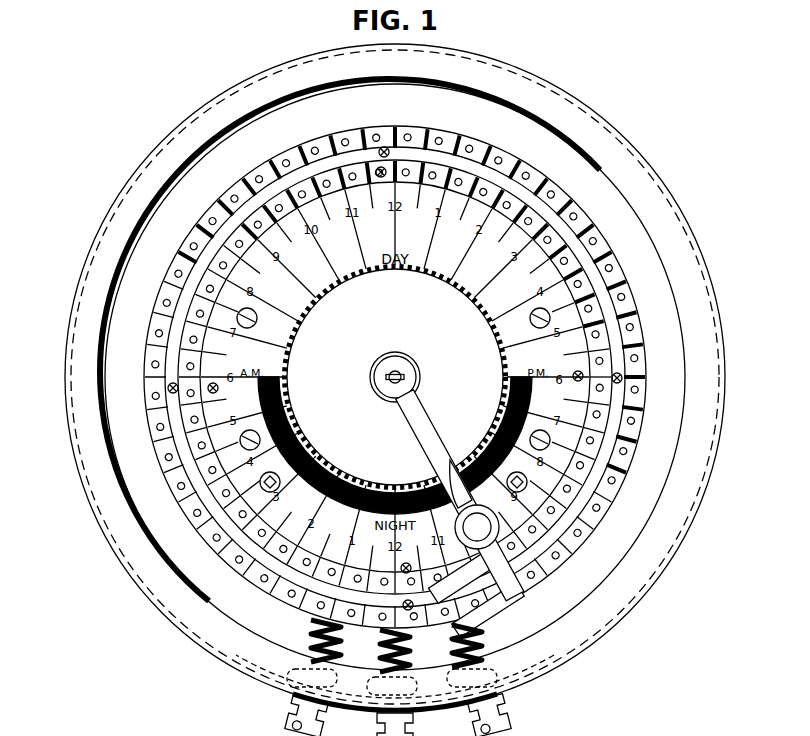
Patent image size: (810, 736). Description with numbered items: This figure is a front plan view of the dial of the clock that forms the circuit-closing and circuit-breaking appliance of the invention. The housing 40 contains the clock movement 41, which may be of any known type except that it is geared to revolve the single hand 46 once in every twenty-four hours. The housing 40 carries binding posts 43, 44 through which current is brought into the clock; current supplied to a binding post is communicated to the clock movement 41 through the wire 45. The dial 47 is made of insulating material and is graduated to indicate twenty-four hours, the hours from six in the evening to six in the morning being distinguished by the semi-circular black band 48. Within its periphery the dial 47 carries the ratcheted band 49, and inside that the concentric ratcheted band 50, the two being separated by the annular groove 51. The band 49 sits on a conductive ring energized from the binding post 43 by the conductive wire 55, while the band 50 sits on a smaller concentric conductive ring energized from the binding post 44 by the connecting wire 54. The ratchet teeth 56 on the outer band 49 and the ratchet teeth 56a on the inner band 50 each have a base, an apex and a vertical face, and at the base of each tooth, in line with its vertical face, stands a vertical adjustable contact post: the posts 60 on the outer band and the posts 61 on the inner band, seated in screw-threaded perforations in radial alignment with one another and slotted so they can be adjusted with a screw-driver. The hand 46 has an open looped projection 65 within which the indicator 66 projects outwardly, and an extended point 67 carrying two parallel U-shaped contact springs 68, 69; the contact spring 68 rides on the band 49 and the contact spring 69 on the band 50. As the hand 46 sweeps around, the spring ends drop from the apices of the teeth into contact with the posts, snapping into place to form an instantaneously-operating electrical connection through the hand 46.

The housing 40 is at (387, 377).
The clock movement 41 is at (395, 377).
The binding post 43 is at (514, 715).
The binding post 44 is at (284, 715).
The wire 45 is at (380, 651).
The hand 46 is at (460, 484).
The dial 47 is at (395, 377).
The semi-circular black band 48 is at (395, 445).
The ratcheted band 49 is at (454, 377).
The concentric ratcheted band 50 is at (472, 377).
The annular groove 51 is at (337, 377).
The connecting wire 54 is at (305, 640).
The conductive wire 55 is at (449, 646).
The ratchet teeth 56 is at (411, 374).
The ratchet teeth 56a is at (497, 377).
The adjustable contact post 60 is at (457, 377).
The adjustable contact post 61 is at (474, 377).
The open looped projection 65 is at (426, 377).
The indicator 66 is at (467, 460).
The extended point 67 is at (540, 530).
The contact spring 68 is at (503, 576).
The contact spring 69 is at (496, 611).